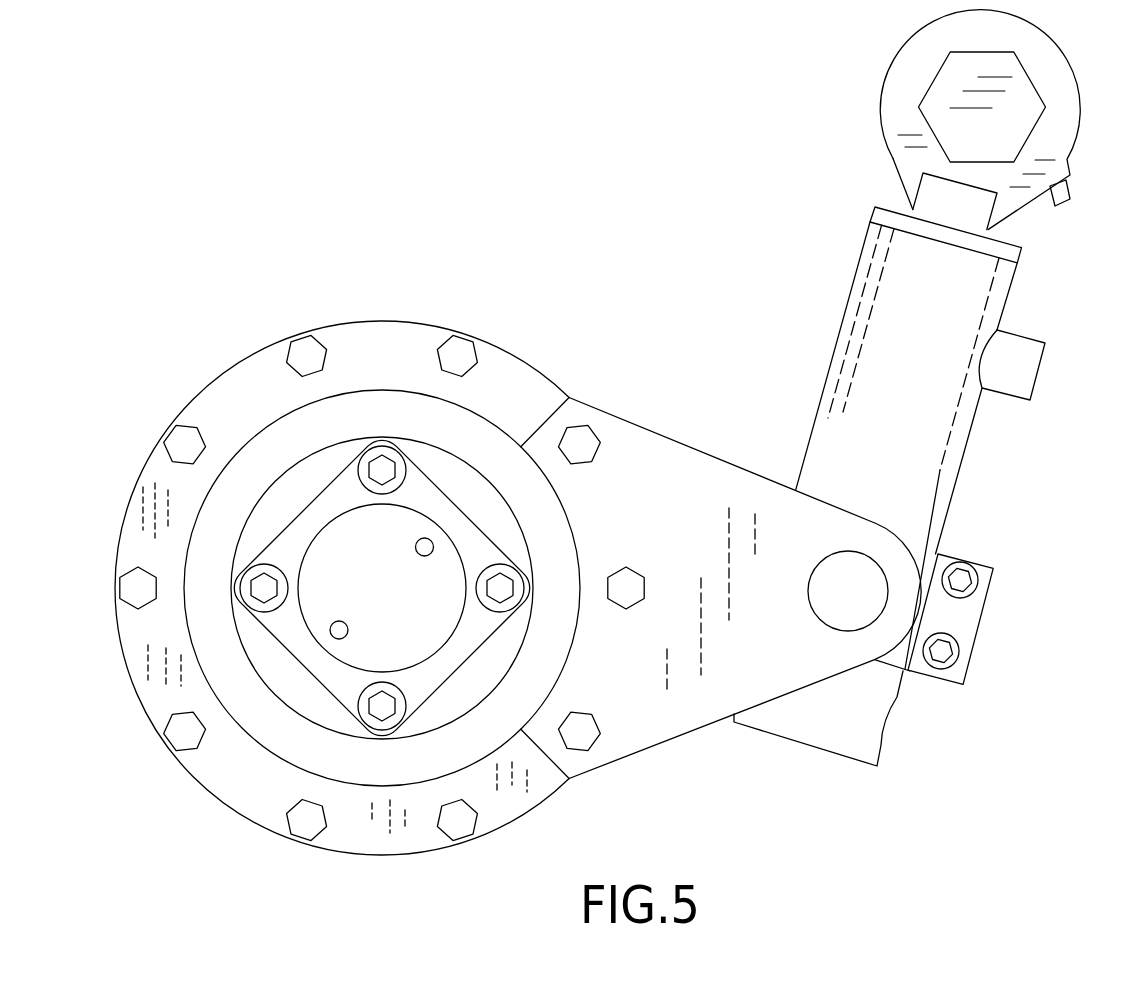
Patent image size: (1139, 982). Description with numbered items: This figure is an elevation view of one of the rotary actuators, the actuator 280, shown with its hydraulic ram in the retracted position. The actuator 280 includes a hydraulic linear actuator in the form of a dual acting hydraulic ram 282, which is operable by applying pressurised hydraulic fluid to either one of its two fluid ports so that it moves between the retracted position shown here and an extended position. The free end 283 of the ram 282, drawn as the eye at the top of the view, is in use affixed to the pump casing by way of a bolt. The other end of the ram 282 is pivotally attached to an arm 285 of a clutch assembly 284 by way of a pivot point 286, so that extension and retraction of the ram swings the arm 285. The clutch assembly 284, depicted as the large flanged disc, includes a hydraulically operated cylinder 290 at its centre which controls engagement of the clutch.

The actuator 280 is at (440, 172).
The dual acting hydraulic ram 282 is at (868, 330).
The free end 283 is at (1020, 85).
The clutch assembly 284 is at (190, 773).
The arm 285 is at (707, 682).
The pivot point 286 is at (874, 594).
The hydraulically operated cylinder 290 is at (354, 529).